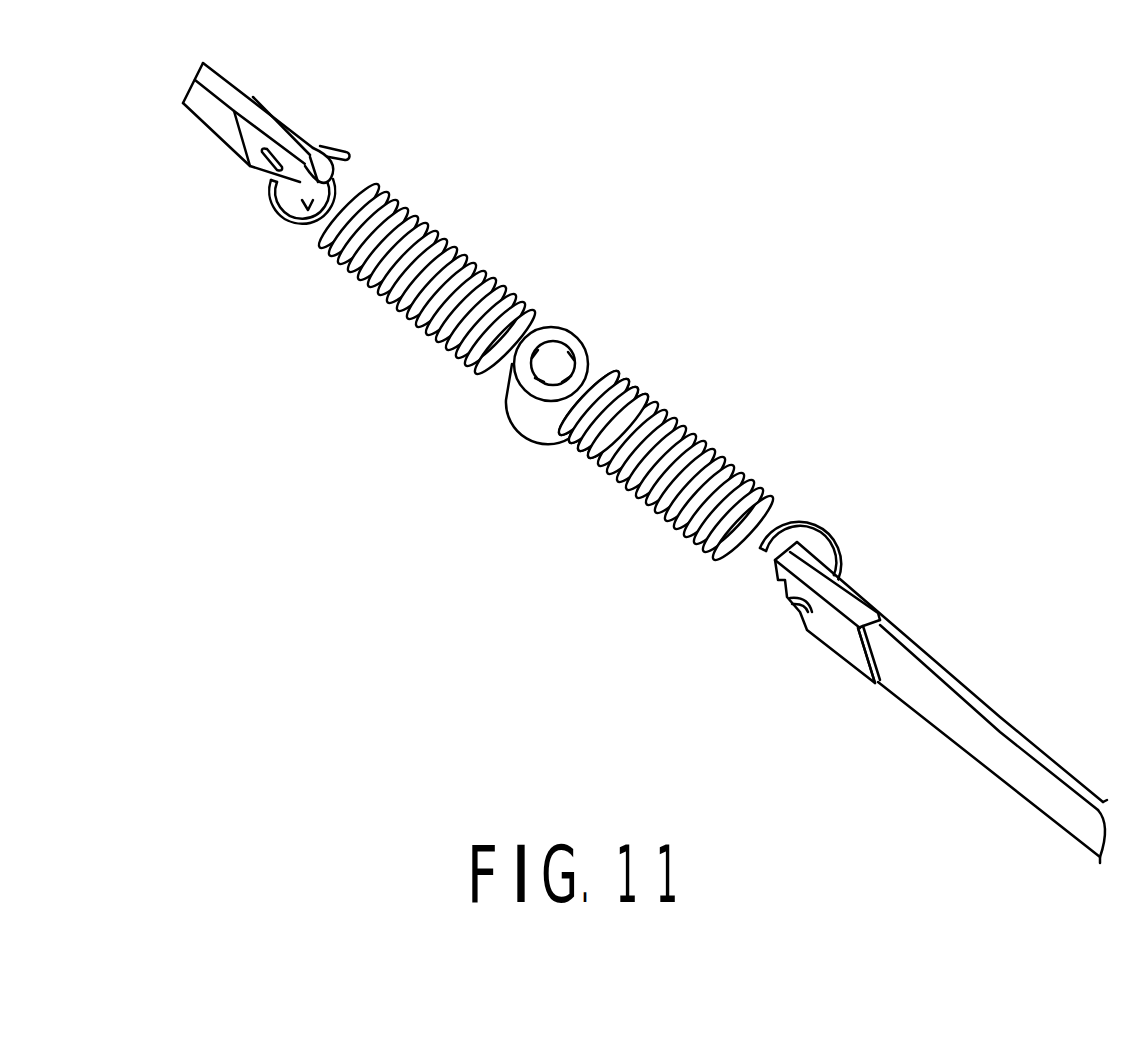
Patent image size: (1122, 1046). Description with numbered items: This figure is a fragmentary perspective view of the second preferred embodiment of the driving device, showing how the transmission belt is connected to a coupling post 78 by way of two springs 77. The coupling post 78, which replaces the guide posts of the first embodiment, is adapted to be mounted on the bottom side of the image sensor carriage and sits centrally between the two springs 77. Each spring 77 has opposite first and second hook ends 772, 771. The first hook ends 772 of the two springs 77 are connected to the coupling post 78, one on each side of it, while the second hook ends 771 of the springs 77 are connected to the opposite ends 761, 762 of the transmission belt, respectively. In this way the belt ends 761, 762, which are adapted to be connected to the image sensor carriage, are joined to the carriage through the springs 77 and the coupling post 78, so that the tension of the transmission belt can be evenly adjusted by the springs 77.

The end of the transmission belt 761 is at (918, 678).
The end of the transmission belt 762 is at (215, 105).
The spring 77 is at (466, 270).
The second hook end 771 is at (330, 150).
The first hook end 772 is at (590, 358).
The coupling post 78 is at (595, 379).